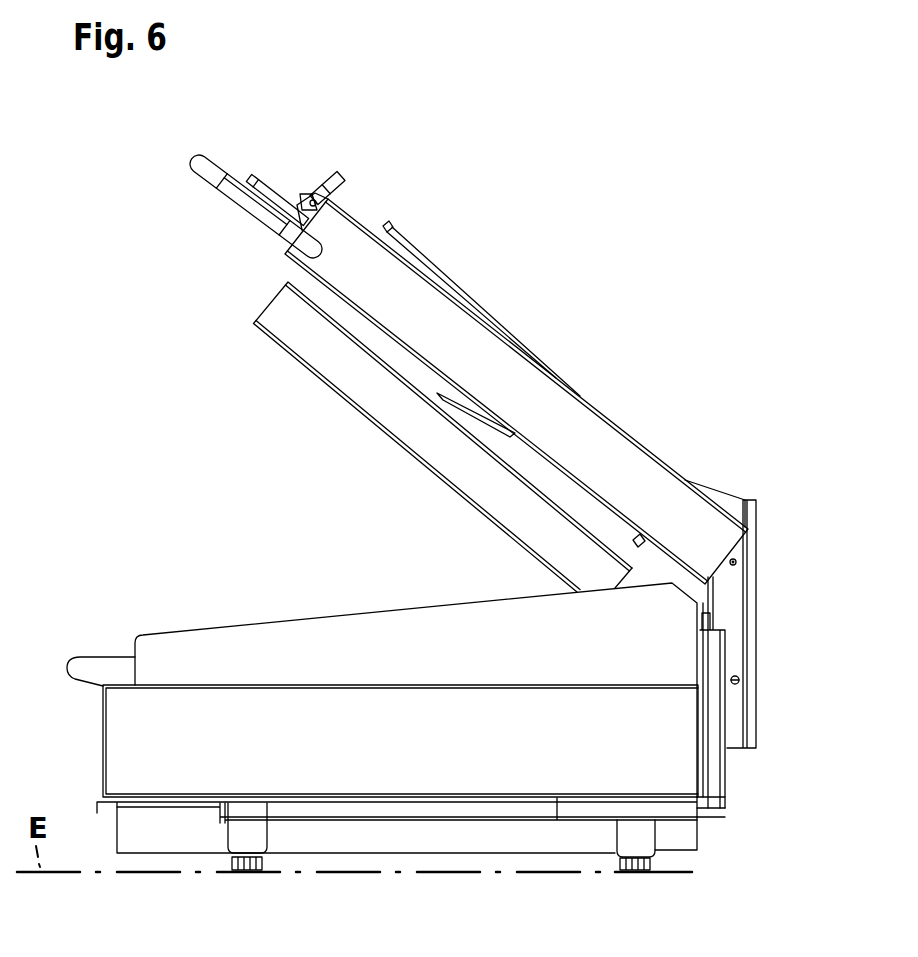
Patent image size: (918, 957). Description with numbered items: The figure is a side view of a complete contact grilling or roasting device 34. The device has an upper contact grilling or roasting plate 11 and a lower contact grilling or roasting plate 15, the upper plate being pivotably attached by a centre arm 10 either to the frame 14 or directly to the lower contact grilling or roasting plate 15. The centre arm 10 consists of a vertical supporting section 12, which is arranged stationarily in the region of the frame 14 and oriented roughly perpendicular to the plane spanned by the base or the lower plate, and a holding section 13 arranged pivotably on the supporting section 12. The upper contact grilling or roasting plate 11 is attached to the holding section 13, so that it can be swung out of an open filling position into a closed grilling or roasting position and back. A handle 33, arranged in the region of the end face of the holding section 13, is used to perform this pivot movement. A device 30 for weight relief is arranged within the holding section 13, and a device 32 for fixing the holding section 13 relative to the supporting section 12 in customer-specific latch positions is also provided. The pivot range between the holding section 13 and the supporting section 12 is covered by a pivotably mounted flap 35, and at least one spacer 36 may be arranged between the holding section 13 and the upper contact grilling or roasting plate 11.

The centre arm 10 is at (511, 325).
The upper contact grilling or roasting plate 11 is at (414, 420).
The vertical supporting section 12 is at (728, 597).
The holding section 13 is at (585, 433).
The frame 14 is at (712, 777).
The lower contact grilling or roasting plate 15 is at (116, 715).
The device for weight relief 30 is at (335, 154).
The device for fixing the holding section 32 is at (277, 164).
The handle 33 is at (210, 166).
The contact grilling or roasting device 34 is at (664, 278).
The pivotably mounted flap 35 is at (718, 492).
The spacer 36 is at (639, 540).